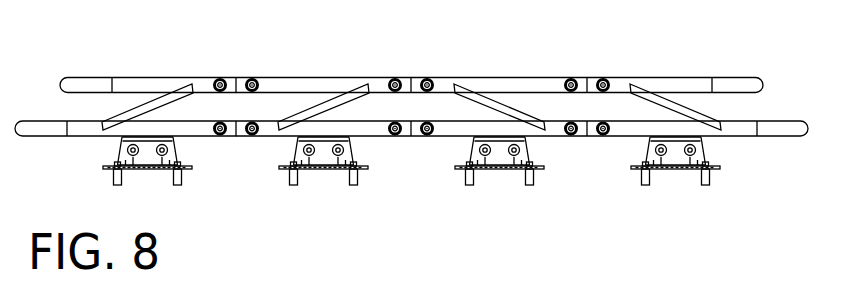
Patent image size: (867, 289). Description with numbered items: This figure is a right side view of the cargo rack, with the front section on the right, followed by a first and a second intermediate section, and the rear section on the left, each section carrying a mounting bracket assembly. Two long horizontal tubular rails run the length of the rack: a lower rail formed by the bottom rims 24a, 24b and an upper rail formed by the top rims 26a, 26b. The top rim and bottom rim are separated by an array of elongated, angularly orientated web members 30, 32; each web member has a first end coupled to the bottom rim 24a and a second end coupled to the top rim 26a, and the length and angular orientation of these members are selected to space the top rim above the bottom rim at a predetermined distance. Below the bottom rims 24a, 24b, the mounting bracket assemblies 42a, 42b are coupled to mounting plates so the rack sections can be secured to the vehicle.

The bottom rim 24a is at (90, 128).
The bottom rim 24b is at (267, 128).
The top rim 26a is at (200, 83).
The top rim 26b is at (365, 80).
The angularly orientated web member 30 is at (147, 104).
The angularly orientated web member 32 is at (317, 107).
The mounting bracket assembly 42a is at (148, 155).
The mounting bracket assembly 42b is at (328, 155).